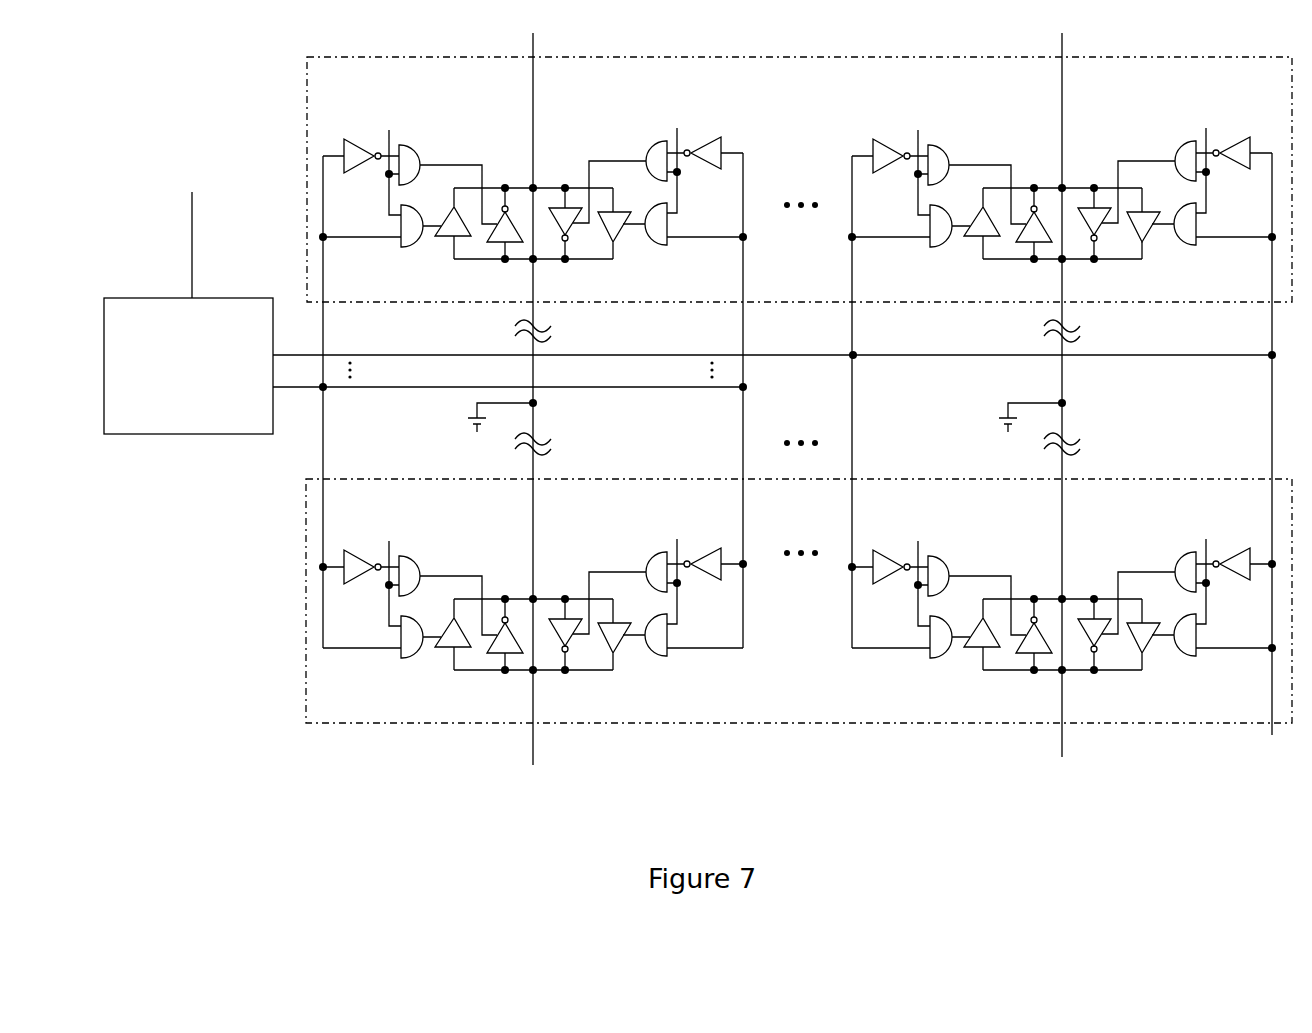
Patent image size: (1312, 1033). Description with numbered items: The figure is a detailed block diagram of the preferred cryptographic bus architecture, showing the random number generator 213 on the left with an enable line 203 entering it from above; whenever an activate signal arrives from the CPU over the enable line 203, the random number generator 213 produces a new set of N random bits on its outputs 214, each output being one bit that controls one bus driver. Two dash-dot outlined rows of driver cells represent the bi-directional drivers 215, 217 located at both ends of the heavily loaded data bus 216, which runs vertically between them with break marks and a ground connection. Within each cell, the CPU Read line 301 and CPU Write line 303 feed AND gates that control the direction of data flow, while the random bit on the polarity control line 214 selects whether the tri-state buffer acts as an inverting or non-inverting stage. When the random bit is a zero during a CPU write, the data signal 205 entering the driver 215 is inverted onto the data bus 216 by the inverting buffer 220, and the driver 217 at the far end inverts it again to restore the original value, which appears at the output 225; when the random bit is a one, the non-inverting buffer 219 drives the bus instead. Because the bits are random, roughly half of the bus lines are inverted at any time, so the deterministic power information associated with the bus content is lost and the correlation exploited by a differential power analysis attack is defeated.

The enable line 203 is at (190, 203).
The random number generator 213 is at (162, 298).
The polarity control line 214 is at (258, 495).
The bi-directional driver 215 is at (307, 67).
The data bus 216 is at (470, 411).
The bi-directional driver 217 is at (303, 700).
The non-inverting buffer 219 is at (1154, 255).
The inverting buffer 220 is at (1096, 192).
The data signal 205 is at (801, 94).
The bit line output 225 is at (802, 745).
The CPU Read line 301 is at (408, 119).
The CPU Write line 303 is at (678, 140).